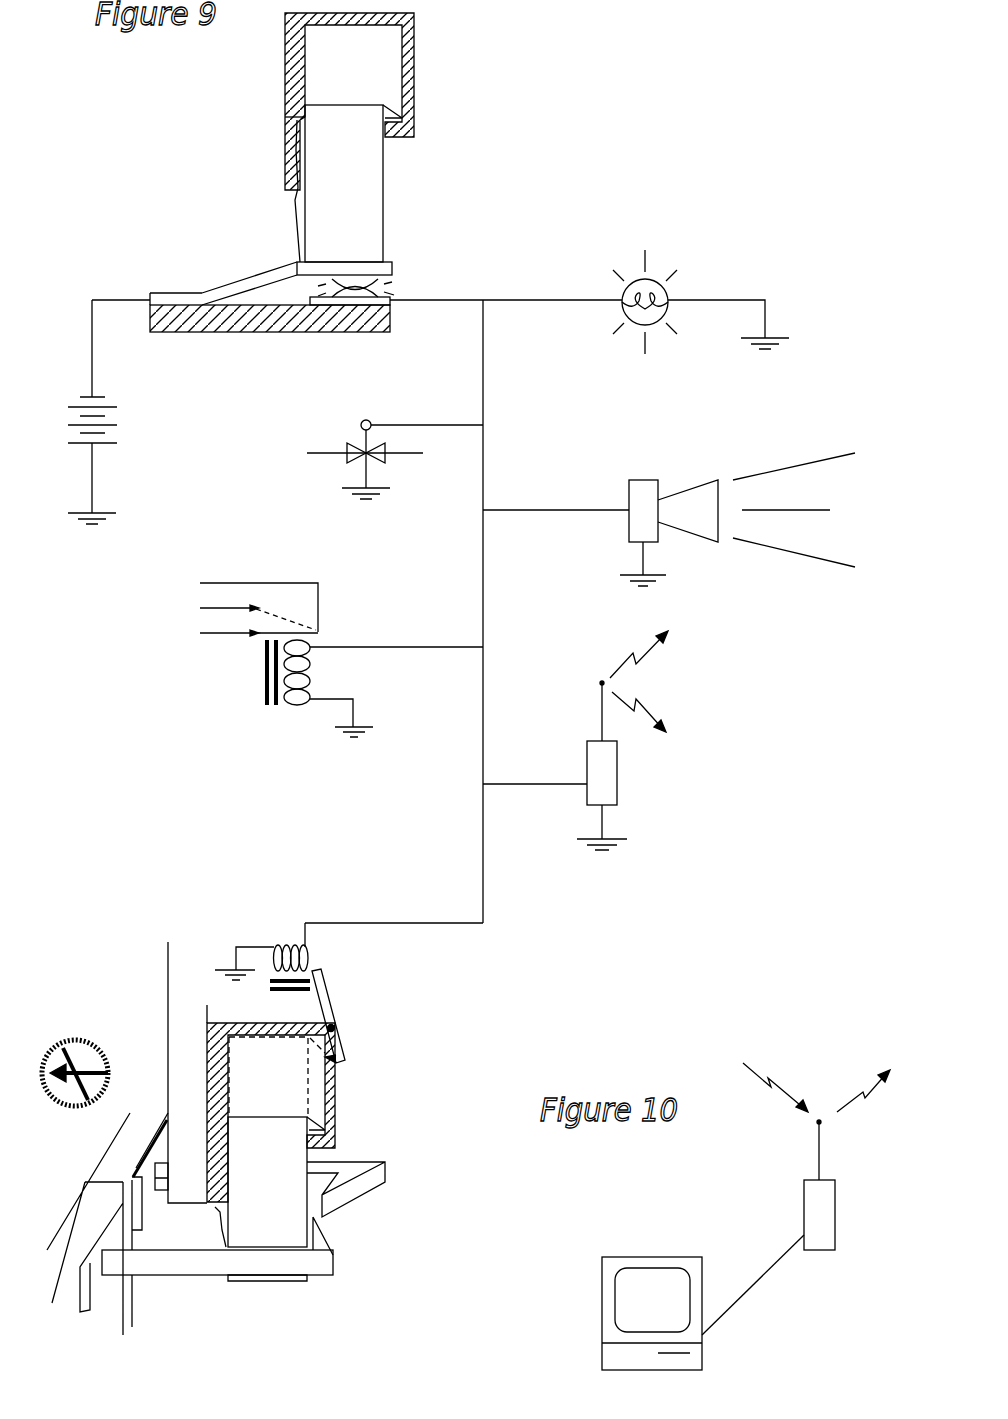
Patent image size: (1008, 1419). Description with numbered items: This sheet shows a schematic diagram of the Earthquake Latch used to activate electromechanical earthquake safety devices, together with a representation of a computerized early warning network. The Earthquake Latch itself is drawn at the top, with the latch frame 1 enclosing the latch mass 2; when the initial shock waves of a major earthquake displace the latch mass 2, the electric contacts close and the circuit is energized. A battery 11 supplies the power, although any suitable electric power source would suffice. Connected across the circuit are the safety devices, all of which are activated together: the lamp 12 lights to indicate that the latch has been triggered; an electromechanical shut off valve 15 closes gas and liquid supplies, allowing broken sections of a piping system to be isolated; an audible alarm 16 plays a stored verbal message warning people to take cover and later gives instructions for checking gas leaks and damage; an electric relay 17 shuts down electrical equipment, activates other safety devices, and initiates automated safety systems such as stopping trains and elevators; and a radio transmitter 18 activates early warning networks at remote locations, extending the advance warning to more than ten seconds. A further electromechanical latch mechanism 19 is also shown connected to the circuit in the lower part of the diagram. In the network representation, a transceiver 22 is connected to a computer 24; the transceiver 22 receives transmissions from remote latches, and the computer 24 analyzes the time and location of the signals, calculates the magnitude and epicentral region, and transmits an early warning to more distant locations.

In FIG. 9, the latch frame 1 is at (417, 58).
In FIG. 9, the latch mass 2 is at (387, 178).
In FIG. 9, the battery 11 is at (81, 412).
In FIG. 9, the electric light 12 is at (628, 298).
In FIG. 9, the electromechanical shut off valve 15 is at (395, 451).
In FIG. 9, the audible warning device 16 is at (688, 516).
In FIG. 9, the electric relay 17 is at (327, 640).
In FIG. 9, the radio transmitter 18 is at (575, 740).
In FIG. 9, the latching relay / solenoid 19 is at (349, 980).
In FIG. 10, the radio transceiver 22 is at (816, 1156).
In FIG. 10, the computer 24 is at (685, 1295).